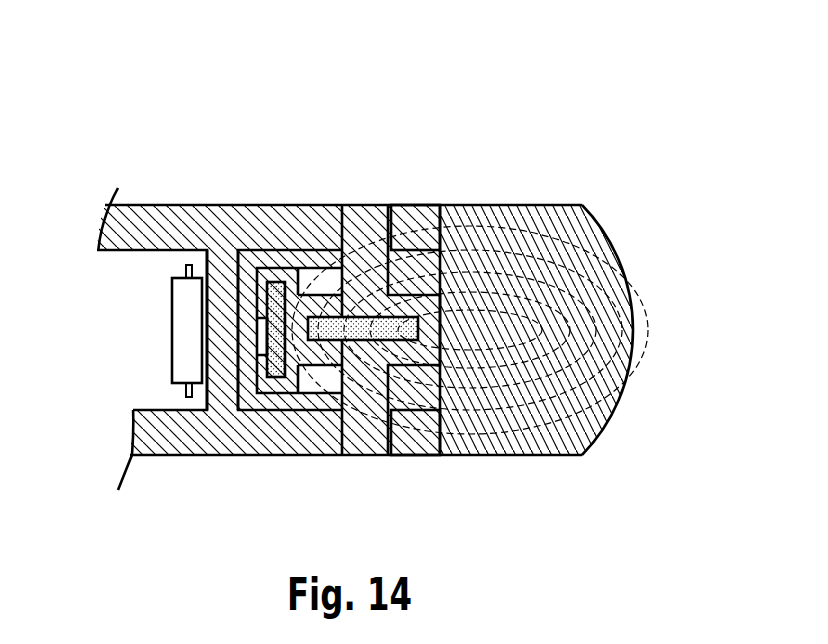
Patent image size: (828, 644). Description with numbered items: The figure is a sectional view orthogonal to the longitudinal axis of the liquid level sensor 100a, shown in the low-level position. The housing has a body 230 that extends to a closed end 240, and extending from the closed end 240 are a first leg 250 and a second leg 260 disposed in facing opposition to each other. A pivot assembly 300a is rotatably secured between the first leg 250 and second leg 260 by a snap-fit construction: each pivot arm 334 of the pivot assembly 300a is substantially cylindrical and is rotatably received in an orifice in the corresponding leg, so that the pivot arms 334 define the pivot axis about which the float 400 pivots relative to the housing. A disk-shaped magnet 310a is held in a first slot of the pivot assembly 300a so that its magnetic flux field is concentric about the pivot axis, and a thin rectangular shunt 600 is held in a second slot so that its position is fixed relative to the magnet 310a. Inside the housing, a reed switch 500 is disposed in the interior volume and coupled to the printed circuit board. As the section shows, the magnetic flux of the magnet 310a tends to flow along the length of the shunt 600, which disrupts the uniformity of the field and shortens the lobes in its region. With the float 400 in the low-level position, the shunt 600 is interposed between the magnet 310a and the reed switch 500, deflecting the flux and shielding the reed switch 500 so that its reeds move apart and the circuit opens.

The liquid level sensor 100a is at (486, 94).
The body 230 is at (205, 212).
The closed end 240 is at (227, 393).
The first leg 250 is at (420, 457).
The second leg 260 is at (282, 212).
The pivot assembly 300a is at (373, 457).
The magnet 310a is at (438, 327).
The pivot arm 334 is at (368, 205).
The float 400 is at (542, 457).
The reed switch 500 is at (172, 305).
The shunt 600 is at (283, 395).